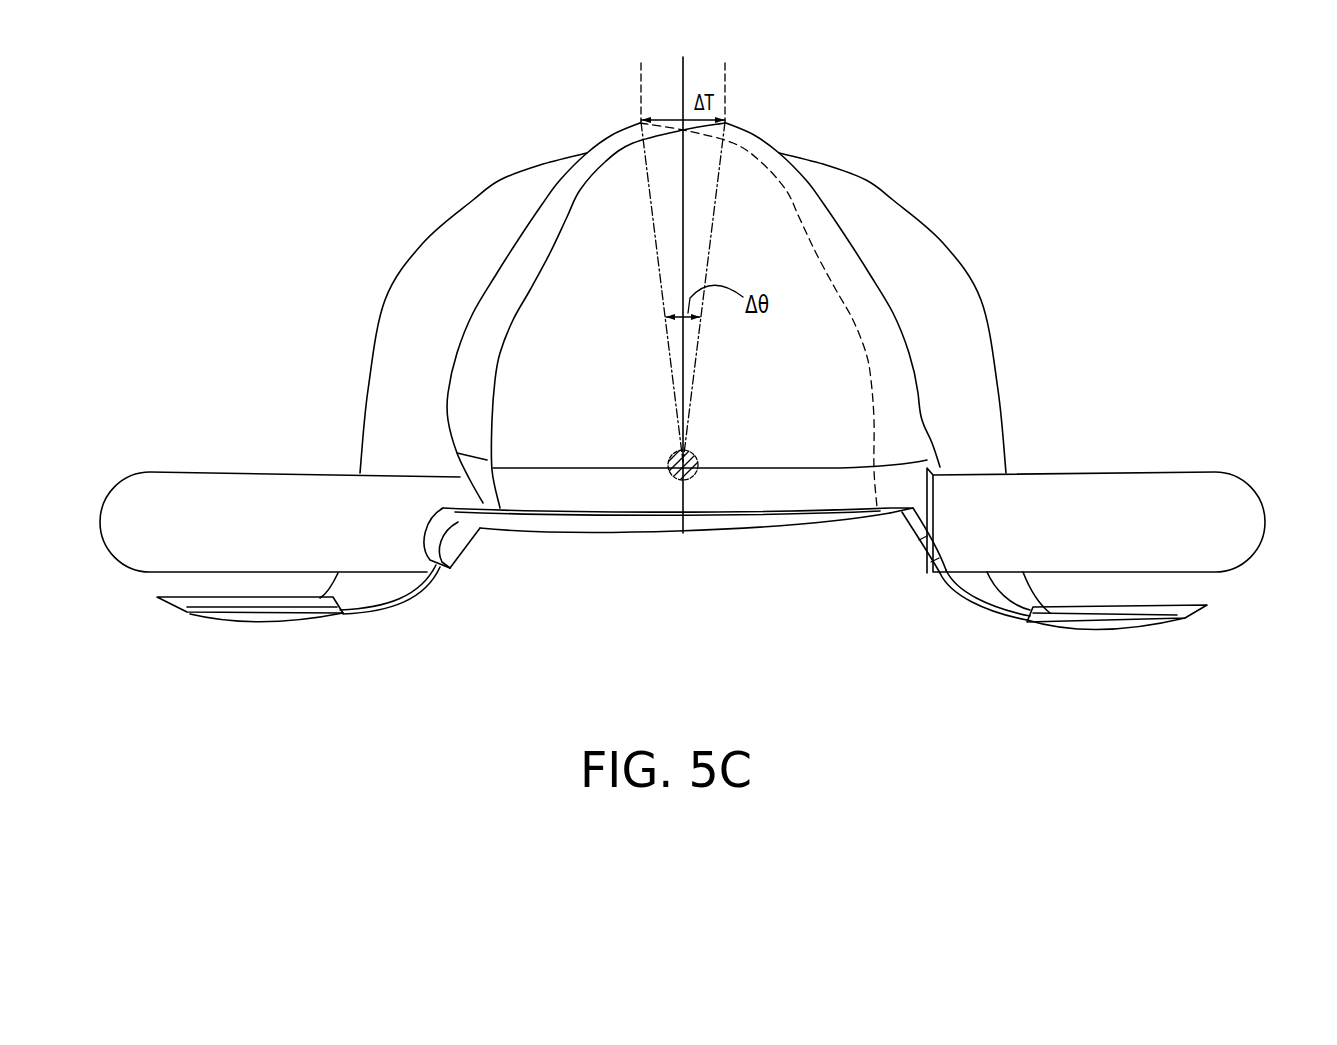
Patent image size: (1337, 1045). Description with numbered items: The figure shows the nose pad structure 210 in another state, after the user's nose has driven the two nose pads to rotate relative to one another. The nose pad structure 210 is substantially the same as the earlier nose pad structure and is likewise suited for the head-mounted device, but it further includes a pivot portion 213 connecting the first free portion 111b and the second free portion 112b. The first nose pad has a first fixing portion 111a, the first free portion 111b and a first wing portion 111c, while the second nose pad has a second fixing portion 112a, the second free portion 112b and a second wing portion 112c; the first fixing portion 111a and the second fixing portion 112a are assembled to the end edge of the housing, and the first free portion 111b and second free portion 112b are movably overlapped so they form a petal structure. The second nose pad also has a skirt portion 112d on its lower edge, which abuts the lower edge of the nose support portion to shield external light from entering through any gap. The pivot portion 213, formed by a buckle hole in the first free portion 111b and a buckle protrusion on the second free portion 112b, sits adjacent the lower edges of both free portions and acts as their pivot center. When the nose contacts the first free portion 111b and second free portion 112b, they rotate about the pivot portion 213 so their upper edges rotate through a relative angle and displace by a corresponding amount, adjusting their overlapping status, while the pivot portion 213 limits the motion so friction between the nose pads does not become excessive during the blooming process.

The nose pad structure 210 is at (1333, 686).
The pivot portion 213 is at (700, 472).
The first fixing portion 111a is at (1103, 488).
The first free portion 111b is at (749, 147).
The first wing portion 111c is at (1113, 613).
The second fixing portion 112a is at (263, 488).
The second free portion 112b is at (617, 147).
The second wing portion 112c is at (253, 613).
The skirt portion 112d is at (597, 527).